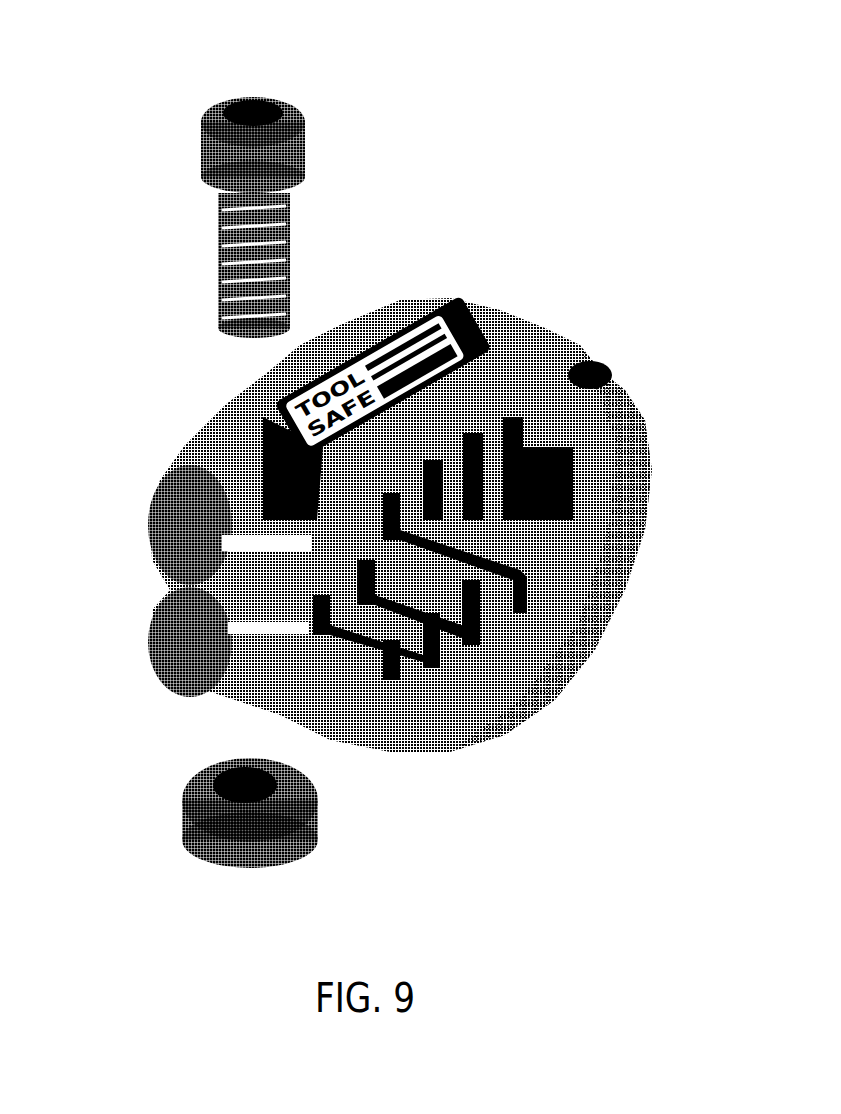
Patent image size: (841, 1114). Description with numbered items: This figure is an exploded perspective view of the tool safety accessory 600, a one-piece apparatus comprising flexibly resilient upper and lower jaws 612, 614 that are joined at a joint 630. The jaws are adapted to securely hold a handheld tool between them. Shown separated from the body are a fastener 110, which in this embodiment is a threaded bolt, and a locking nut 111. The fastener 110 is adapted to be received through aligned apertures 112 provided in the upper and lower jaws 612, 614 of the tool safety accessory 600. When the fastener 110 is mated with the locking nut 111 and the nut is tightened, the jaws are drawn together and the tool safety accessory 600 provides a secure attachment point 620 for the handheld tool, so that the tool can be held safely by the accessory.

The tool safety accessory 600 is at (433, 817).
The fastener 110 is at (232, 96).
The locking nut 111 is at (182, 817).
The aligned apertures 112 is at (222, 537).
The upper jaw 612 is at (165, 530).
The lower jaw 614 is at (172, 647).
The attachment point 620 is at (595, 363).
The joint 630 is at (635, 418).